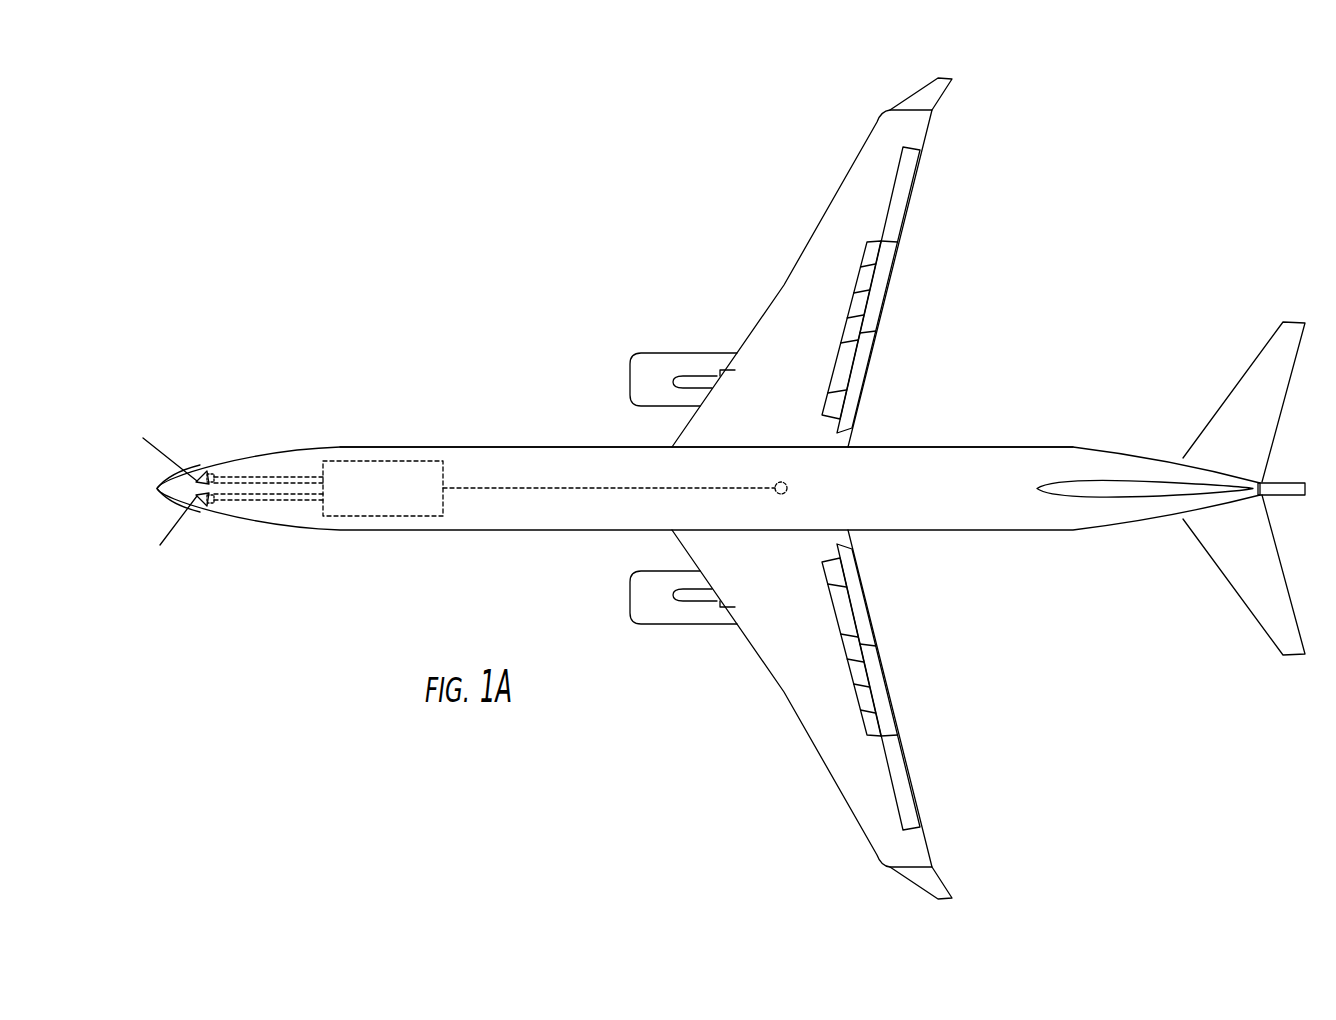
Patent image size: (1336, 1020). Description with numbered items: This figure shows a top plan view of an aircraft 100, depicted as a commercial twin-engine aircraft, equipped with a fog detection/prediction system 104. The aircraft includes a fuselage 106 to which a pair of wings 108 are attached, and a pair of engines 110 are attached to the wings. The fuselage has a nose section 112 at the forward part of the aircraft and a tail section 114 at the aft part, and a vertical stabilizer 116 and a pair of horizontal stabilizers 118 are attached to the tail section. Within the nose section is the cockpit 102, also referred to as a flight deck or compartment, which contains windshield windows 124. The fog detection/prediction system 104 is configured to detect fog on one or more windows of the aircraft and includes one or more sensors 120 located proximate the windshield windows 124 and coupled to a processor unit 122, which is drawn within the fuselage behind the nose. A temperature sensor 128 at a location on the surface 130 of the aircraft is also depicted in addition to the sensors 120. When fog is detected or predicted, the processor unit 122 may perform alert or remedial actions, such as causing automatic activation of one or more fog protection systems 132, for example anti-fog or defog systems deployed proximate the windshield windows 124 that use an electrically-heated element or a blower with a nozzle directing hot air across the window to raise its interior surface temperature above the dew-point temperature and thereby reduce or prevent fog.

The aircraft 100 is at (464, 331).
The cockpit 102 is at (217, 524).
The fog detection/prediction system 104 is at (412, 576).
The fuselage 106 is at (452, 446).
The wings 108 is at (781, 288).
The engines 110 is at (687, 351).
The nose section 112 is at (148, 482).
The tail section 114 is at (1147, 597).
The vertical stabilizer 116 is at (1290, 483).
The horizontal stabilizers 118 is at (1240, 372).
The sensors 120 is at (204, 471).
The processor unit 122 is at (343, 461).
The windshield windows 124 is at (162, 489).
The temperature sensor 128 is at (790, 487).
The surface 130 is at (954, 500).
The fog protection systems 132 is at (213, 476).